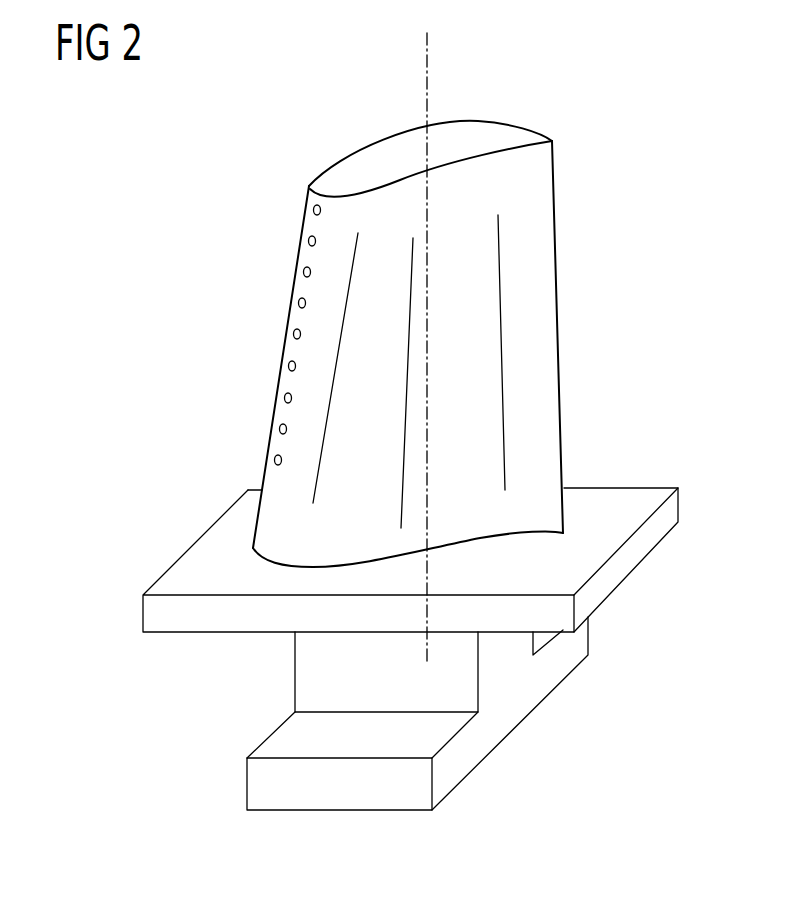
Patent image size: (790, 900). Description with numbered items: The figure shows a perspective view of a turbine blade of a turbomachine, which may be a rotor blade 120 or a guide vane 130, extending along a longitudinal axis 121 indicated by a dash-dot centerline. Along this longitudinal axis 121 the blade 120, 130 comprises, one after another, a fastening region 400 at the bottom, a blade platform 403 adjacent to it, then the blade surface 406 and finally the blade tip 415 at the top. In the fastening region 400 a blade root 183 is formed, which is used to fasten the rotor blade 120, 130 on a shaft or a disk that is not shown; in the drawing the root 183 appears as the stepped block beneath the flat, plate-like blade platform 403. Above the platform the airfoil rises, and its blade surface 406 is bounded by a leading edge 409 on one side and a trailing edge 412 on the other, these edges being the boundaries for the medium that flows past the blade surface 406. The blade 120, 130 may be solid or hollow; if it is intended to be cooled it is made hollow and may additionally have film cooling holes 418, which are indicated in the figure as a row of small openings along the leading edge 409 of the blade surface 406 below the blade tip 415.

The rotor blade 120 is at (355, 330).
The guide vane 130 is at (355, 330).
The longitudinal axis 121 is at (428, 57).
The blade tip 415 is at (363, 160).
The film cooling holes 418 is at (313, 212).
The leading edge 409 is at (284, 280).
The blade surface 406 is at (308, 388).
The trailing edge 412 is at (569, 305).
The blade platform 403 is at (637, 552).
The fastening region 400 is at (406, 713).
The blade root 183 is at (282, 743).